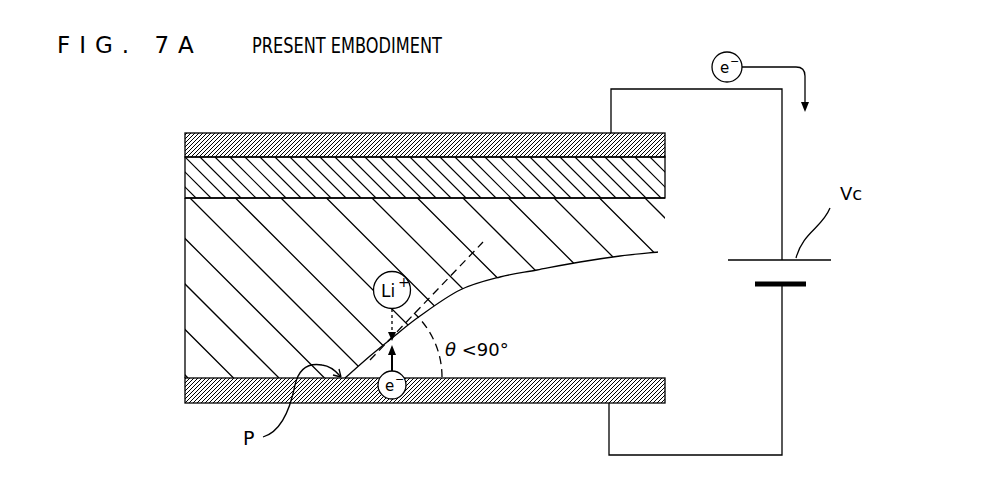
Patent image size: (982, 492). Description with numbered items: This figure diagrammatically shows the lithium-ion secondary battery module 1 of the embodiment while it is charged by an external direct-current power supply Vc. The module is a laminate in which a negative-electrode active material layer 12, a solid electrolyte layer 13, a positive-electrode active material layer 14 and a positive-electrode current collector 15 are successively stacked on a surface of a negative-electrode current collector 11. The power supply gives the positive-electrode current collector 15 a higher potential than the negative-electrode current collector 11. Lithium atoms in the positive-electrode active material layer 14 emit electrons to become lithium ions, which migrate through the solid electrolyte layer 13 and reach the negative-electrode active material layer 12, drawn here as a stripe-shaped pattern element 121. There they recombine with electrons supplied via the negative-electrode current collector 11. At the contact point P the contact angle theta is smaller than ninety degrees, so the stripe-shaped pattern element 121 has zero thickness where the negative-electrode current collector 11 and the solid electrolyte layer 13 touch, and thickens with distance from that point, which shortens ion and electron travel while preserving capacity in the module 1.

The lithium-ion secondary battery module 1 is at (377, 110).
The negative-electrode current collector 11 is at (180, 378).
The negative-electrode active material layer 12 is at (657, 328).
The stripe-shaped pattern element 121 is at (501, 315).
The solid electrolyte layer 13 is at (180, 198).
The positive-electrode active material layer 14 is at (180, 157).
The positive-electrode current collector 15 is at (180, 133).